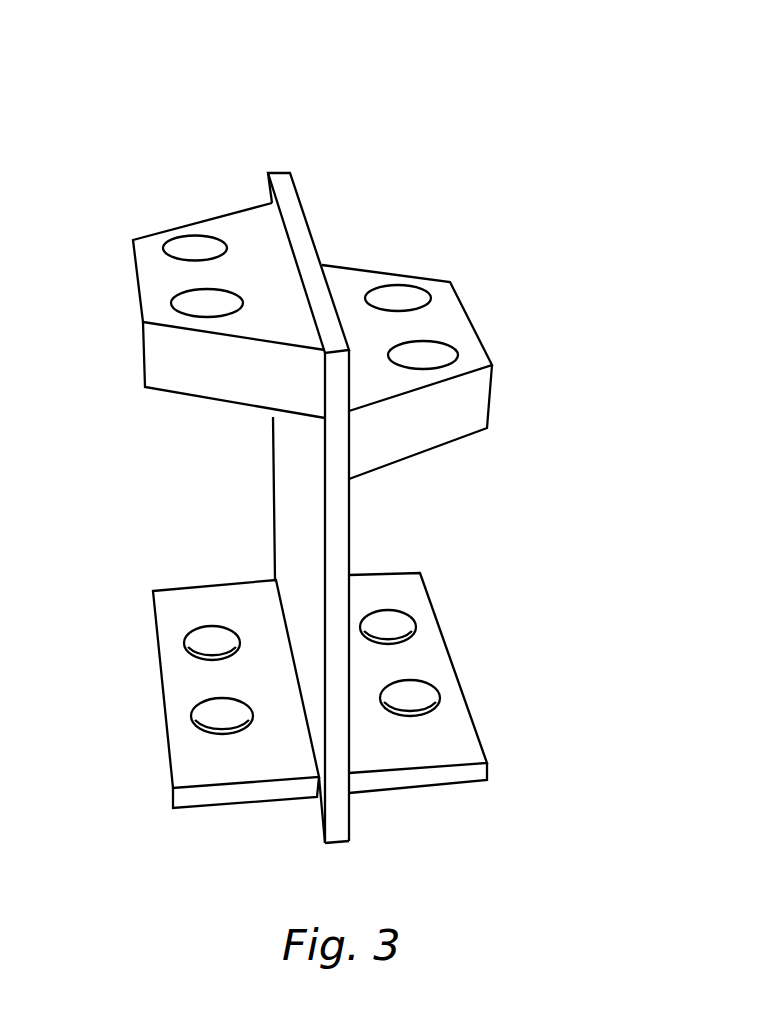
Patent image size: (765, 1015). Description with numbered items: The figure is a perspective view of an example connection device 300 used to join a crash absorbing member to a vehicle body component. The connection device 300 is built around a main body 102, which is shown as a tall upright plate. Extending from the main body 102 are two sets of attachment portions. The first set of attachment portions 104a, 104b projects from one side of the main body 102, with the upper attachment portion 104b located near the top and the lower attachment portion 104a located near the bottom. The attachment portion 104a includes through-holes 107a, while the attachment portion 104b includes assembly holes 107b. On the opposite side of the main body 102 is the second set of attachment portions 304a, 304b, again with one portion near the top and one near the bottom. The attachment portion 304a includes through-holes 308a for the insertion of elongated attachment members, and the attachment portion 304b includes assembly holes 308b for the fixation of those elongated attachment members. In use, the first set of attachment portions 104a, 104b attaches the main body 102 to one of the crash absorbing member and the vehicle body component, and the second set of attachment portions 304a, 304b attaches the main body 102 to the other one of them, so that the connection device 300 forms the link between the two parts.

The connection device 300 is at (389, 112).
The main body 102 is at (298, 487).
The attachment portion 304a is at (195, 767).
The attachment portion 304b is at (250, 230).
The through-holes 308a is at (203, 635).
The assembly holes 308b is at (200, 302).
The attachment portion 104a is at (422, 658).
The attachment portion 104b is at (442, 322).
The through-holes 107a is at (393, 625).
The assembly holes 107b is at (402, 295).